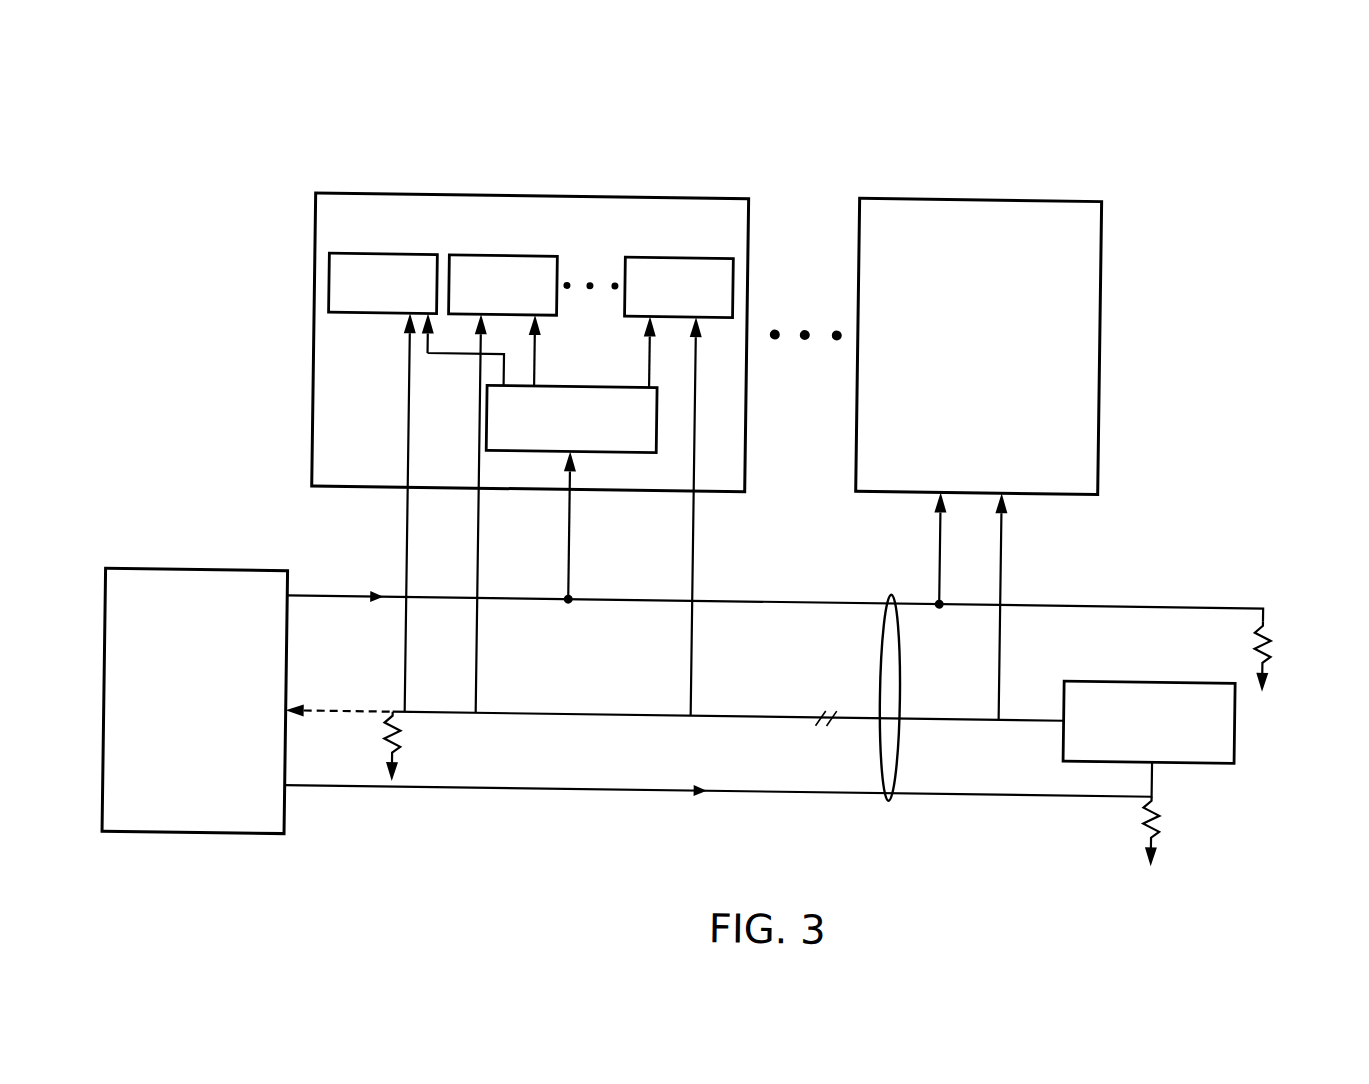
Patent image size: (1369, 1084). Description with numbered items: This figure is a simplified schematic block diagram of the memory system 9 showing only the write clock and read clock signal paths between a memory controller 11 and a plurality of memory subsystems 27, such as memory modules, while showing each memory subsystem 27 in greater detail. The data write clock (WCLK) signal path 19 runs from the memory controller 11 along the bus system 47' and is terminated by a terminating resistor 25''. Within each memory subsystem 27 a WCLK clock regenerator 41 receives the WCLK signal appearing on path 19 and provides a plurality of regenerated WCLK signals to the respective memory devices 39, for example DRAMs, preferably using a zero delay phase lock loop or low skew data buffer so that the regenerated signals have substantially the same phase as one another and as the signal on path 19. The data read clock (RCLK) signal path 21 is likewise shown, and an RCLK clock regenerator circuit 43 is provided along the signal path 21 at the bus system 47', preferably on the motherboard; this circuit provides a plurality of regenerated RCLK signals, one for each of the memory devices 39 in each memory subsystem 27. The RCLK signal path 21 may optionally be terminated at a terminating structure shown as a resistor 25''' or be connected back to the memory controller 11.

The memory controller 11 is at (255, 583).
The data write clock (WCLK) signal path 19 is at (443, 598).
The data read clock (RCLK) signal path 21 is at (423, 791).
The memory system 9 is at (677, 520).
The memory subsystem 27 is at (746, 411).
The memory device 39 is at (324, 283).
The WCLK clock regenerator 41 is at (655, 410).
The RCLK clock regenerator circuit 43 is at (1238, 728).
The bus system 47' is at (904, 723).
The terminating resistor 25'' is at (1235, 729).
The terminating resistor 25''' is at (422, 747).